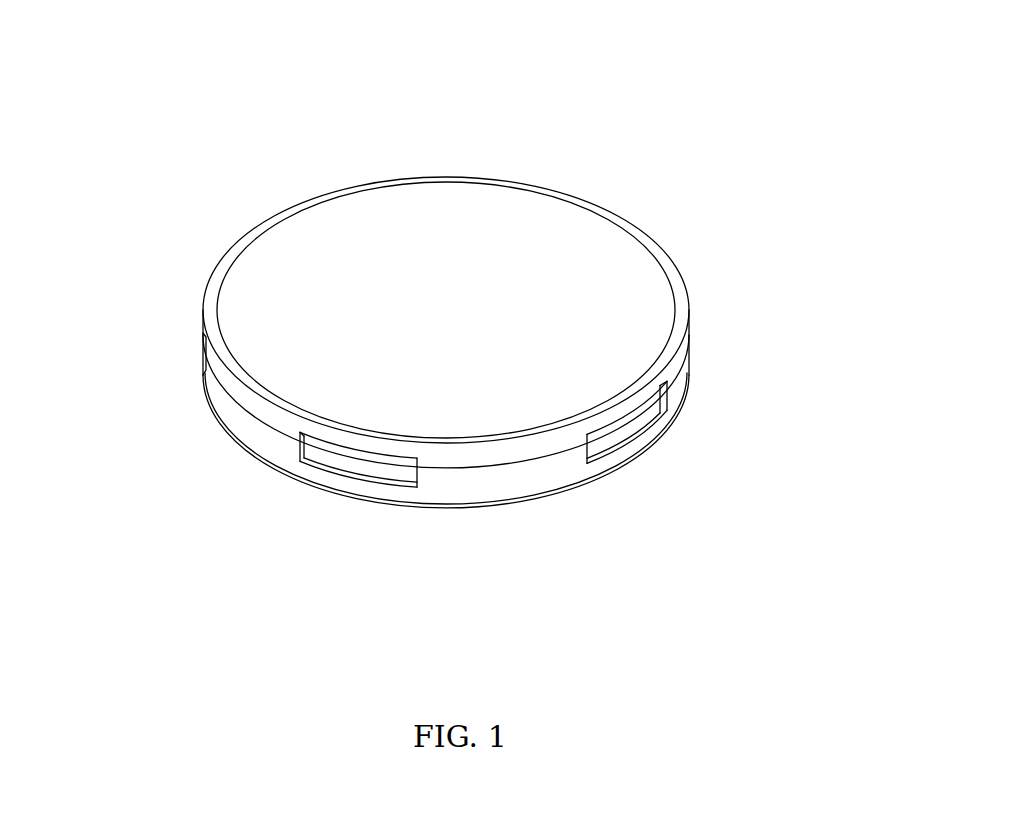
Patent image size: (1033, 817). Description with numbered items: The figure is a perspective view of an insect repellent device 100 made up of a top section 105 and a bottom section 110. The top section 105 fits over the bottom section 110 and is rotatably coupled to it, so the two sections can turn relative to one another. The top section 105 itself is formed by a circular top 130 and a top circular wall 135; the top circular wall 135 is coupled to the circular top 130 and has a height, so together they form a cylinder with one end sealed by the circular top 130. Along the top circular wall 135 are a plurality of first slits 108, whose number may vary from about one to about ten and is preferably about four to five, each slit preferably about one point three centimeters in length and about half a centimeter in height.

The insect repellent device 100 is at (475, 344).
The top section 105 is at (590, 203).
The plurality of first slits 108 is at (300, 463).
The bottom section 110 is at (468, 509).
The circular top 130 is at (404, 250).
The top circular wall 135 is at (690, 363).